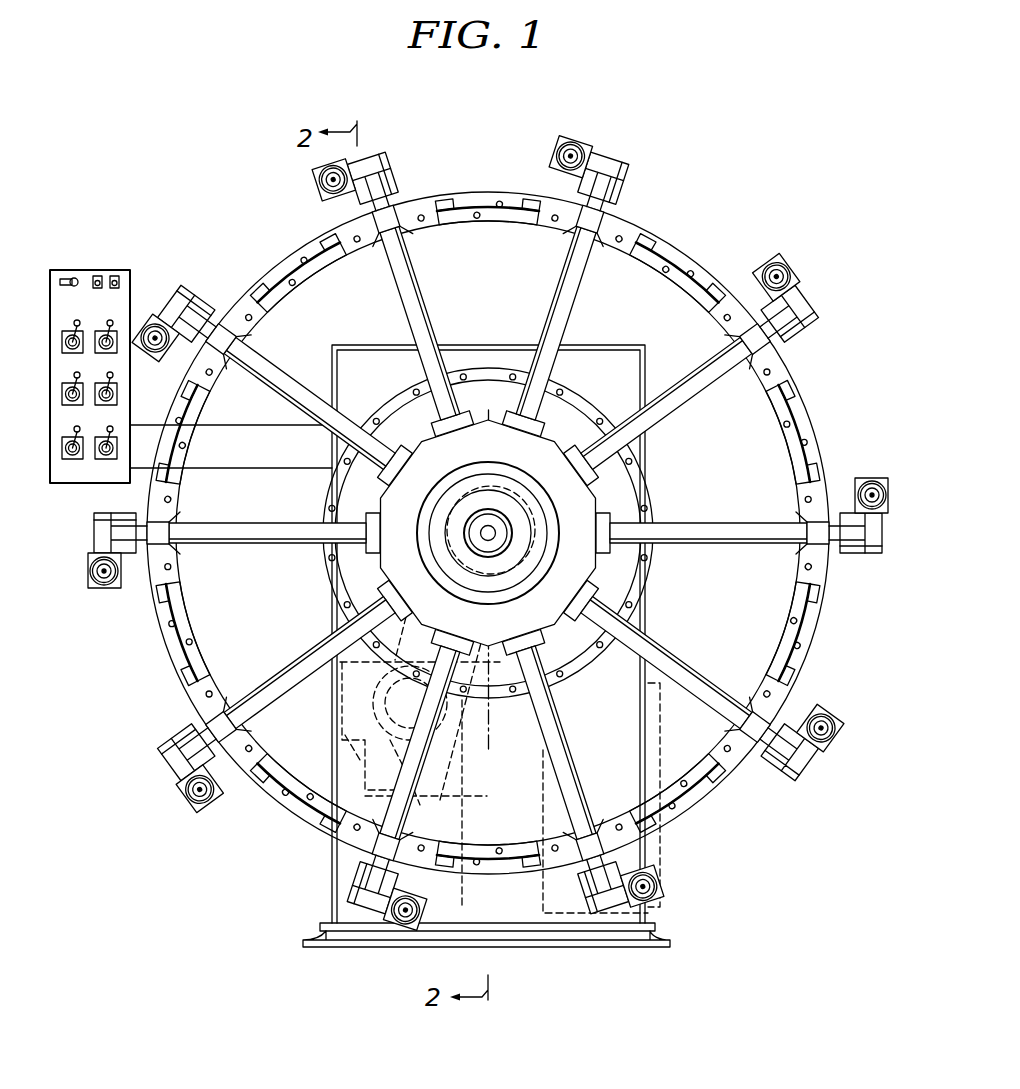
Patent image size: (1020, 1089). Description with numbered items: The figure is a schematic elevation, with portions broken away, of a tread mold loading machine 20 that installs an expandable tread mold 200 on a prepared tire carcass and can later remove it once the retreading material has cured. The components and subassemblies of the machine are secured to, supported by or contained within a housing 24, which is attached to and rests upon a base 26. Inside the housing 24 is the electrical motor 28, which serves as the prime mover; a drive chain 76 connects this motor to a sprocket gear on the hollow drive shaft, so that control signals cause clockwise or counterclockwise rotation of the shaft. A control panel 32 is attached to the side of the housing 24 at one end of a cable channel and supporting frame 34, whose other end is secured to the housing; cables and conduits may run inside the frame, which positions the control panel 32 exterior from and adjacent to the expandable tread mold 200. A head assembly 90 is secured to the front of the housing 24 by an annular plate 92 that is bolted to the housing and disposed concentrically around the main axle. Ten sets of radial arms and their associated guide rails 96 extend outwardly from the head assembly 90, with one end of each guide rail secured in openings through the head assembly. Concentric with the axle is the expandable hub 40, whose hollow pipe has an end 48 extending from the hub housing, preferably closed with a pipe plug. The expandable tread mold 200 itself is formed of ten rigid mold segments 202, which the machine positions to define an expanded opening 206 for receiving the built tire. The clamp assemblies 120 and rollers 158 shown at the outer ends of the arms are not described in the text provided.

The tread mold loading machine 20 is at (399, 655).
The housing 24 is at (330, 880).
The base 26 is at (320, 937).
The electrical motor 28 is at (448, 793).
The control panel 32 is at (84, 269).
The cable channel and supporting frame 34 is at (235, 455).
The expandable hub 40 is at (503, 506).
The end of pipe 48 is at (484, 527).
The drive chain 76 is at (443, 612).
The head assembly 90 is at (452, 474).
The annular plate 92 is at (372, 413).
The guide rails 96 is at (404, 300).
The clamp assembly 120 is at (381, 154).
The roller 158 is at (572, 142).
The expandable tread mold 200 is at (826, 646).
The mold segments 202 is at (274, 261).
The expanded opening 206 is at (460, 243).